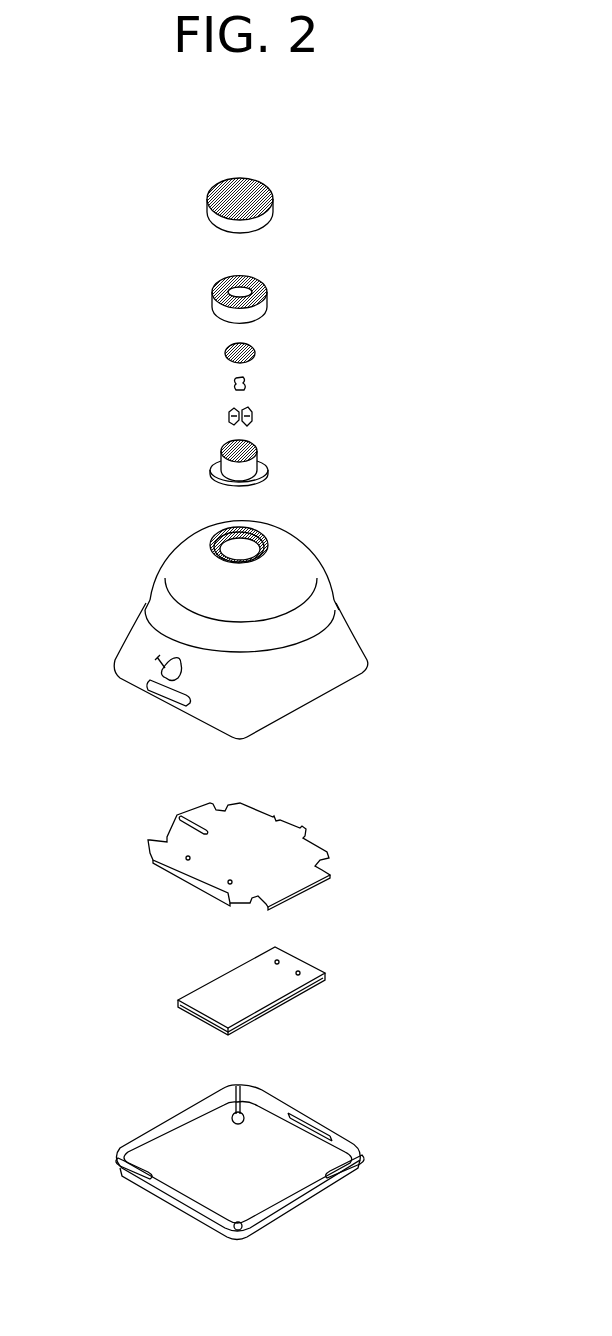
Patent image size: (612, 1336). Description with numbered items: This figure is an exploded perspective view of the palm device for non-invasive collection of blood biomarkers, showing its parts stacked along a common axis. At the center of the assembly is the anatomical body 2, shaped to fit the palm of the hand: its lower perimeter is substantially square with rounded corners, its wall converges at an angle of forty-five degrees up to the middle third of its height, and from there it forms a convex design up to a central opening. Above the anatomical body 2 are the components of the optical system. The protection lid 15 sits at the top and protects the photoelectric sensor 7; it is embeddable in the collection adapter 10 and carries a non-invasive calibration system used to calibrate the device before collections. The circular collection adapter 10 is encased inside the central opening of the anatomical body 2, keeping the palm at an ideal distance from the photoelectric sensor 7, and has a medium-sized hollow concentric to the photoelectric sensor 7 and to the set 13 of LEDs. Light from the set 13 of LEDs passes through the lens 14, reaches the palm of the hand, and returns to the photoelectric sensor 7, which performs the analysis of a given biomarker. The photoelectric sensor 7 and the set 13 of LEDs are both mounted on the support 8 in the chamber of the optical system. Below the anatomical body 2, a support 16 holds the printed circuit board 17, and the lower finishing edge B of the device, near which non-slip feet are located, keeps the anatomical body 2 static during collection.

The anatomical body 2 is at (137, 568).
The photoelectric sensor 7 is at (247, 381).
The support 8 is at (268, 460).
The collection adapter 10 is at (268, 298).
The set of LEDs 13 is at (206, 408).
The lens 14 is at (227, 348).
The protection lid 15 is at (208, 219).
The support 16 is at (307, 832).
The printed circuit board 17 is at (230, 993).
The finishing edge B is at (125, 1108).